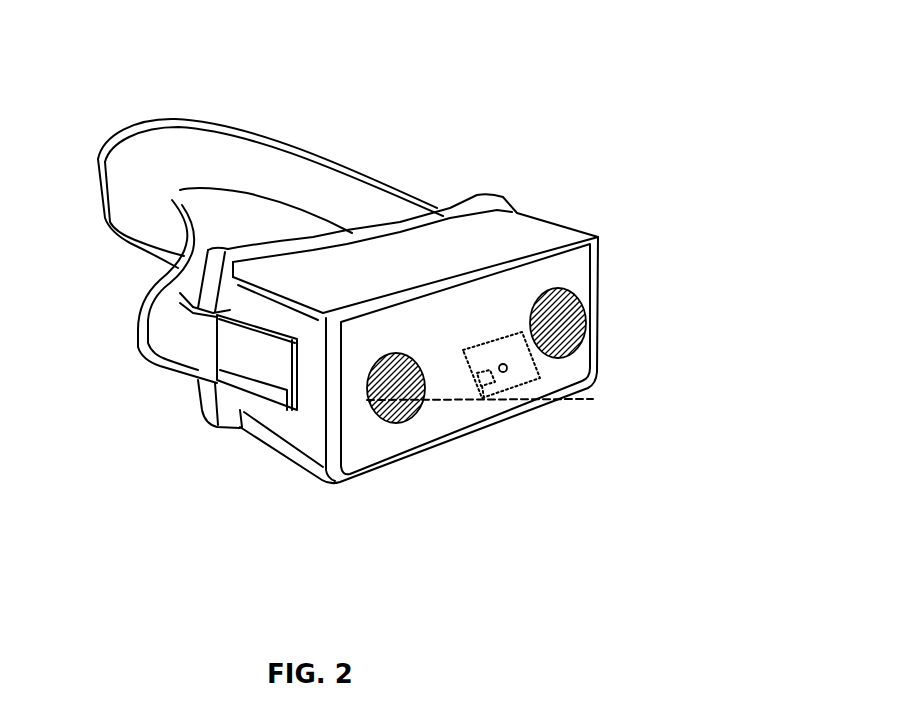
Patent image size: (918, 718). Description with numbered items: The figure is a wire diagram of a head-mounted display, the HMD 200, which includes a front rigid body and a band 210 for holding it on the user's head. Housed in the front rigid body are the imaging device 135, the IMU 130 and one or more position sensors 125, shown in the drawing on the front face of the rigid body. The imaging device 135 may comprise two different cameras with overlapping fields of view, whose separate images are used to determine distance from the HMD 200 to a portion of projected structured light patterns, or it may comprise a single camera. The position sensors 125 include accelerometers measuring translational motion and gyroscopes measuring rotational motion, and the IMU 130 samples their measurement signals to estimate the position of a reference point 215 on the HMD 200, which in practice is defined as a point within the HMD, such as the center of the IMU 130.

The HMD 200 is at (68, 68).
The band 210 is at (355, 168).
The imaging device 135 is at (430, 557).
The IMU 130 is at (593, 399).
The position sensors 125 is at (488, 376).
The reference point 215 is at (505, 372).